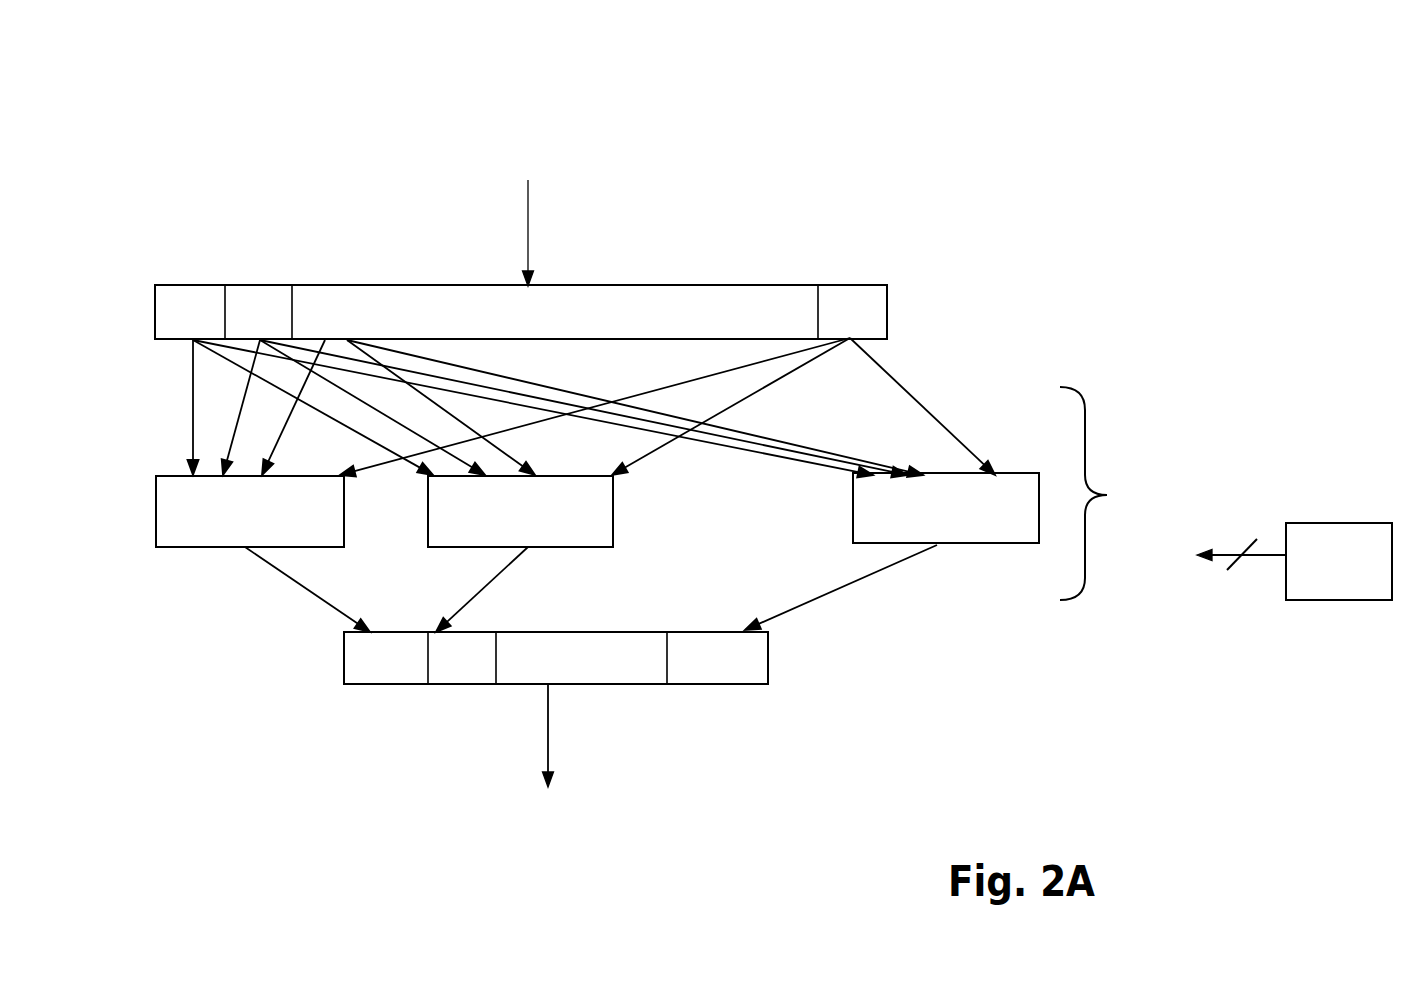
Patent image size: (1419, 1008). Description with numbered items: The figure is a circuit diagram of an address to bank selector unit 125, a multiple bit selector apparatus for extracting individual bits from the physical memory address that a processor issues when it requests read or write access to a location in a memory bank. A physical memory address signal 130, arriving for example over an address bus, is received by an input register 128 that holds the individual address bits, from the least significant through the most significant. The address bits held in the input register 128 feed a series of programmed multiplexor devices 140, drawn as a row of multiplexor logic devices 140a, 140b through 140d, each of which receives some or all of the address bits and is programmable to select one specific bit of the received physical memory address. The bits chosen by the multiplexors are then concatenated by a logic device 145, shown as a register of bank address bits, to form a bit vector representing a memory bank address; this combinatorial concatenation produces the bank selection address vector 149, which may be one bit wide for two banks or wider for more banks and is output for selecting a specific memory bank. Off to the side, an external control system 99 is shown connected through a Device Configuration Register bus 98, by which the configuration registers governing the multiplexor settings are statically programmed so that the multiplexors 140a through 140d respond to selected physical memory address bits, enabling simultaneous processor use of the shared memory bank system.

The address to bank selector unit 125 is at (258, 45).
The physical memory address signal 130 is at (532, 223).
The input register 128 is at (803, 284).
The programmed multiplexor devices 140 is at (1107, 493).
The multiplexor logic device 140a is at (173, 498).
The multiplexor logic device 140b is at (593, 512).
The multiplexor logic device 140d is at (1013, 527).
The logic device 145 is at (340, 678).
The bank selection address vector 149 is at (550, 740).
The external control system 99 is at (1302, 523).
The Device Configuration Register (DCR) bus 98 is at (1242, 572).